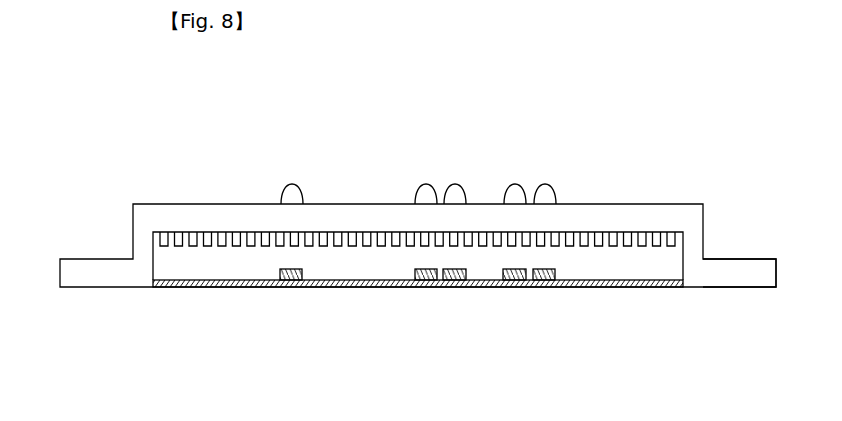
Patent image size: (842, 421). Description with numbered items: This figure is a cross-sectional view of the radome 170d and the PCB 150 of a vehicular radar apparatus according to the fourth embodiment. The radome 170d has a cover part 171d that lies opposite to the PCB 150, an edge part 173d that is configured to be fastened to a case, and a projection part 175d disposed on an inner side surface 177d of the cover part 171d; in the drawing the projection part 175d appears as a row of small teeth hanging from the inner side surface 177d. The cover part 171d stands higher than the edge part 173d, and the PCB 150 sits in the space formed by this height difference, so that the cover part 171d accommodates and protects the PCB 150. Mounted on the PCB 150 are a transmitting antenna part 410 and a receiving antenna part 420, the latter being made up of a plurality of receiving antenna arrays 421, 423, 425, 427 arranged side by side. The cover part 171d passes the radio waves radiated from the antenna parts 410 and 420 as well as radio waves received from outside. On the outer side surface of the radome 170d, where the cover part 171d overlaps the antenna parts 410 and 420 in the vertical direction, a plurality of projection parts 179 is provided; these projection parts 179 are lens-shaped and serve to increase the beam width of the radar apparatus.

The radome 170d is at (712, 123).
The cover part 171d is at (652, 213).
The edge part 173d is at (727, 267).
The projection part 175d is at (598, 232).
The inner side surface 177d is at (530, 232).
The projection parts 179 is at (290, 185).
The PCB 150 is at (659, 287).
The transmitting antenna part 410 is at (292, 287).
The receiving antenna part 420 is at (407, 348).
The receiving antenna array 421 is at (427, 287).
The receiving antenna array 423 is at (455, 287).
The receiving antenna array 425 is at (522, 287).
The receiving antenna array 427 is at (547, 287).